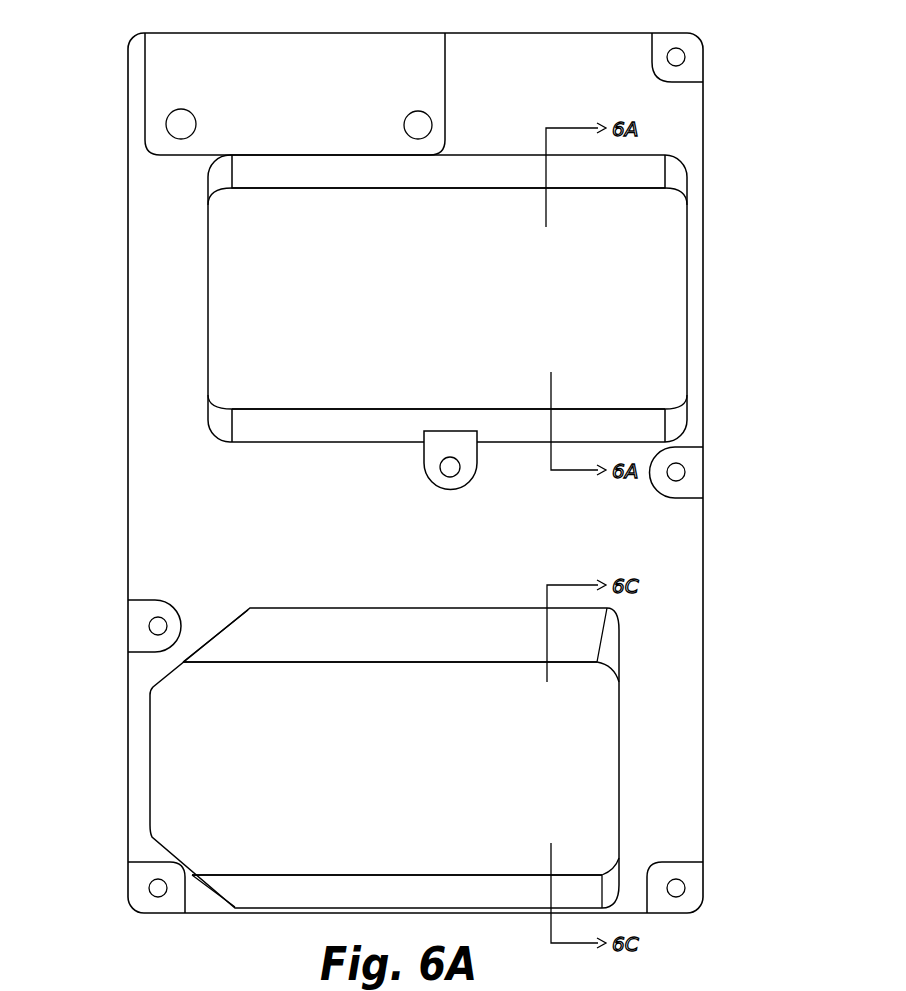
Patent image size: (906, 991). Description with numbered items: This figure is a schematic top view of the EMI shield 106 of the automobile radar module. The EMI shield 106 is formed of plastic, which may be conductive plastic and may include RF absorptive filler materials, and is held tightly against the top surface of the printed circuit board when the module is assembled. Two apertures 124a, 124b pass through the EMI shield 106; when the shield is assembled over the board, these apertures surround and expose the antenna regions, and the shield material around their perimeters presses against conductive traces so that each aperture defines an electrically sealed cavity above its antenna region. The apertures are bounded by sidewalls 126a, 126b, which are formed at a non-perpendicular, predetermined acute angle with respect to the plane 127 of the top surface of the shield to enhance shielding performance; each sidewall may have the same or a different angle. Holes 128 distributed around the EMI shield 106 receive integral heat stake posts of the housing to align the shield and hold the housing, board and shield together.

The EMI shield 106 is at (103, 106).
The aperture 124a is at (351, 304).
The aperture 124b is at (263, 772).
The sidewalls 126a is at (368, 190).
The sidewalls 126b is at (360, 637).
The plane of the top surface 127 is at (170, 988).
The holes 128 is at (680, 52).